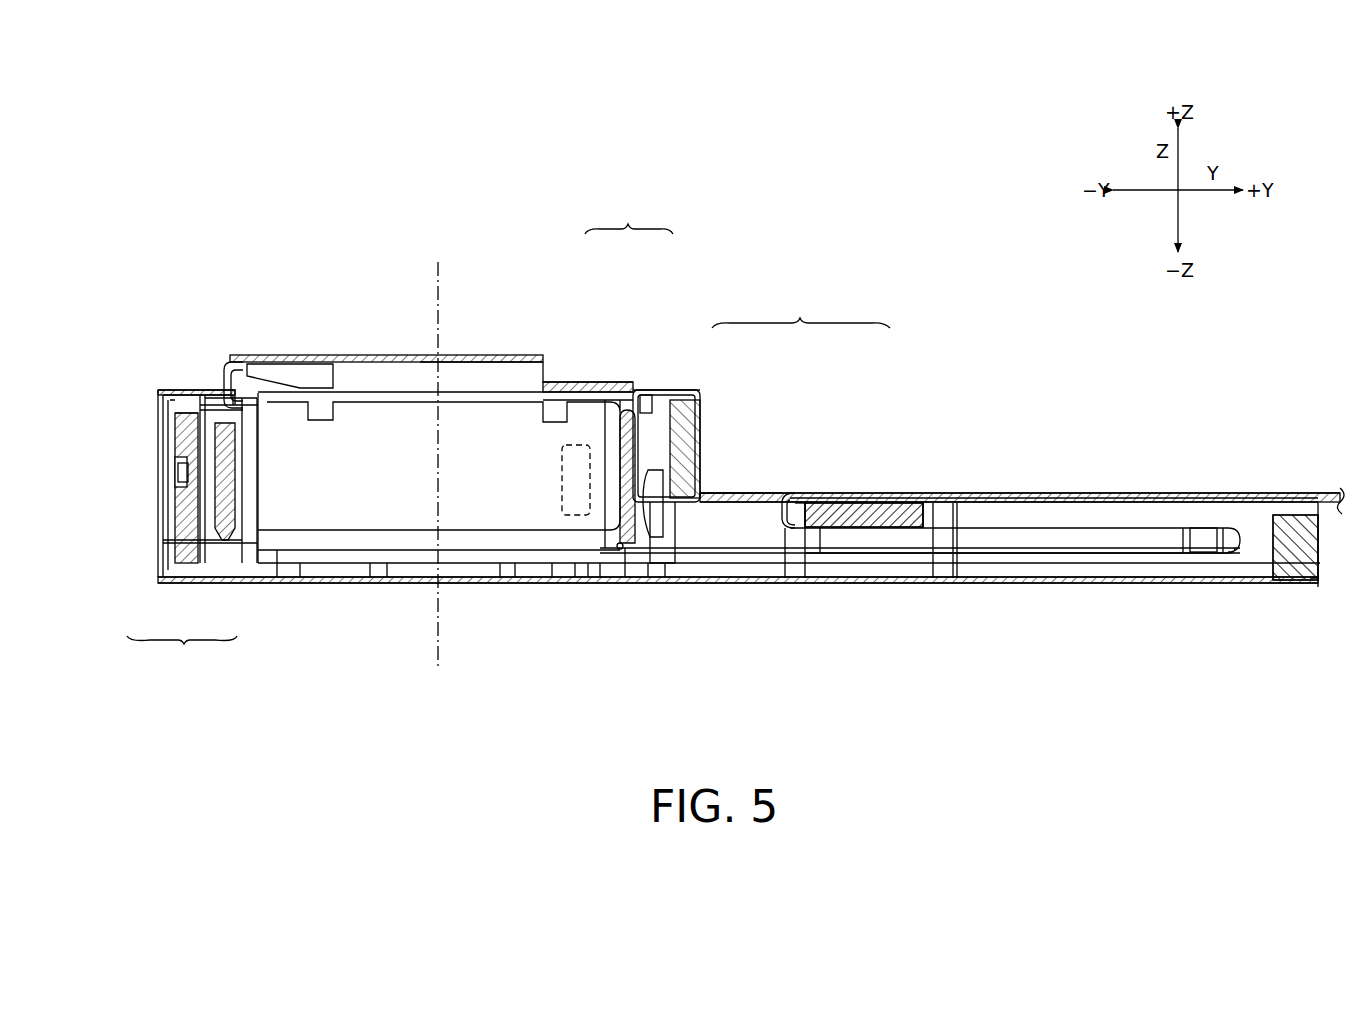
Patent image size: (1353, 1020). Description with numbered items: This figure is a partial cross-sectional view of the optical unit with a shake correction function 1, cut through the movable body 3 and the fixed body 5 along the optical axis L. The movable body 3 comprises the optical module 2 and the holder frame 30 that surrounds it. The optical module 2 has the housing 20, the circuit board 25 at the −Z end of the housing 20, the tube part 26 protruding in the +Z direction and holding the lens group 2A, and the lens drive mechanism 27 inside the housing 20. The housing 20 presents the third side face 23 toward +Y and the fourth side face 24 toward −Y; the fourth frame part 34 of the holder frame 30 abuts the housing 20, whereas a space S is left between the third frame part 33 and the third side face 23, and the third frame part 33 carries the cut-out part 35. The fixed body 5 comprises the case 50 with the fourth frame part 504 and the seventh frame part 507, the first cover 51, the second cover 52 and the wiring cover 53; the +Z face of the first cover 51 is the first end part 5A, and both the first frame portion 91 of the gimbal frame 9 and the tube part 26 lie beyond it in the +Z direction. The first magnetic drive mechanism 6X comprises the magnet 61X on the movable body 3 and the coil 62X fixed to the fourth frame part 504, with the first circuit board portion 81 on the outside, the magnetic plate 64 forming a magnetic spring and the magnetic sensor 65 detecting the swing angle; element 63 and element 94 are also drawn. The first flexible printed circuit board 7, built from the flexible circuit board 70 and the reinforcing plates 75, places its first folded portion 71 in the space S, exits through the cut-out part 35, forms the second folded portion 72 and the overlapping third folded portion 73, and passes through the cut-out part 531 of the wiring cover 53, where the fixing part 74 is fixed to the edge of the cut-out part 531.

The optical unit with a shake correction function 1 is at (138, 198).
The optical module 2 is at (532, 352).
The lens group 2A is at (398, 353).
The movable body 3 is at (629, 217).
The fixed body 5 is at (796, 468).
The first end part 5A is at (185, 393).
The first flexible printed circuit board 7 is at (1245, 490).
The gimbal frame 9 is at (262, 350).
The housing 20 is at (431, 524).
The third side face 23 is at (628, 522).
The fourth side face 24 is at (285, 562).
The circuit board 25 is at (342, 548).
The tube part 26 is at (362, 355).
The lens drive mechanism 27 is at (578, 518).
The holder frame 30 is at (961, 436).
The third frame part 33 is at (680, 445).
The fourth frame part 34 is at (250, 556).
The cut-out part 35 is at (663, 515).
The case 50 is at (702, 412).
The first cover 51 is at (700, 375).
The second cover 52 is at (960, 494).
The wiring cover 53 is at (853, 494).
The cut-out part 531 is at (800, 494).
The fourth frame part 504 is at (168, 395).
The seventh frame part 507 is at (1298, 575).
The magnet 61X is at (232, 548).
The coil 62X is at (178, 565).
The first magnetic drive mechanism 6X is at (182, 652).
The piezoelectric element 63 is at (238, 468).
The magnetic plate 64 is at (175, 428).
The magnetic sensor 65 is at (183, 475).
The flexible circuit board 70 is at (750, 556).
The first folded portion 71 is at (637, 382).
The second folded portion 72 is at (1140, 556).
The third folded portion 73 is at (985, 494).
The fixing part 74 is at (832, 540).
The reinforcing plate 75 is at (660, 455).
The first circuit board portion 81 is at (136, 492).
The first frame portion 91 is at (297, 352).
The bracket 94 is at (196, 395).
The optical axis L is at (450, 274).
The space S is at (623, 552).